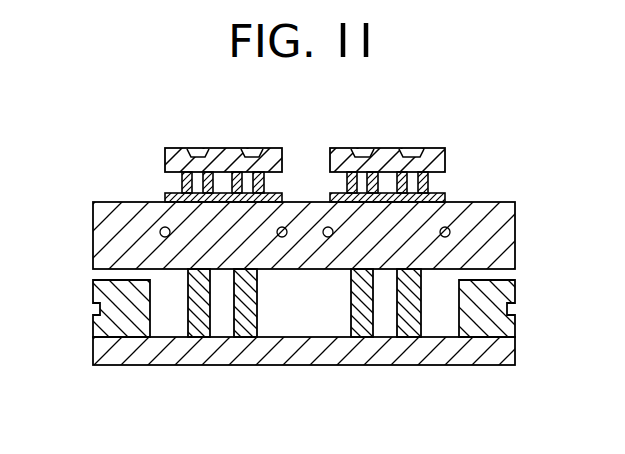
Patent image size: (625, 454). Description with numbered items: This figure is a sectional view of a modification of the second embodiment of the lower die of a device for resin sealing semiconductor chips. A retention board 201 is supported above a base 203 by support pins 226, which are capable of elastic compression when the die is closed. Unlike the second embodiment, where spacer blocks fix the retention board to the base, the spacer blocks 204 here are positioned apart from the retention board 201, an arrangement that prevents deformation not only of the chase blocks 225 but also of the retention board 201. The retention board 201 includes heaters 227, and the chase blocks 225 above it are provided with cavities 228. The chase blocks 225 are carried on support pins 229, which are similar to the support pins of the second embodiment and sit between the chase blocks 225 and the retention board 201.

The retention board 201 is at (488, 242).
The base 203 is at (448, 347).
The spacer blocks 204 is at (120, 297).
The chase blocks 225 is at (173, 158).
The support pins 226 is at (247, 322).
The heaters 227 is at (162, 228).
The cavities 228 is at (253, 148).
The support pins 229 is at (284, 169).